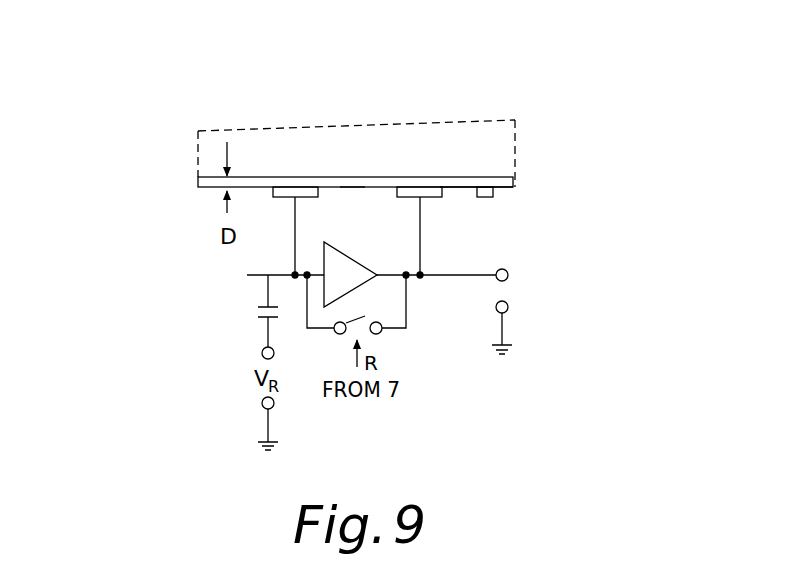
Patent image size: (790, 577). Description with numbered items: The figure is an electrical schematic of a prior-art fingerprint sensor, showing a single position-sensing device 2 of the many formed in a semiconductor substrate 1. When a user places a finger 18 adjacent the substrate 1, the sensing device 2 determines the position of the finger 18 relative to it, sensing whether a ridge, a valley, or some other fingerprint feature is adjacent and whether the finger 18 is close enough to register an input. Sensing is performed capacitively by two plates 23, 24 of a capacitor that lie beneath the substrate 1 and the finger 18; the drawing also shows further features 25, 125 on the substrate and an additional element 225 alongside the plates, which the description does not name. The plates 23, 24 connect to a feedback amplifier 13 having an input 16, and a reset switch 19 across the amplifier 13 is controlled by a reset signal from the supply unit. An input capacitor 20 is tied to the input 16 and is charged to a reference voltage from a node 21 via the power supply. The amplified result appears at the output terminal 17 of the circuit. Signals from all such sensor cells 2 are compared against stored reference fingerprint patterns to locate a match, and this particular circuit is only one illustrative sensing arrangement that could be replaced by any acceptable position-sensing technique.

The substrate 1 is at (503, 183).
The position-sensing device 2 is at (146, 261).
The feedback amplifier 13 is at (350, 252).
The input 16 is at (293, 275).
The output terminal 17 is at (508, 275).
The finger 18 is at (378, 123).
The reset switch 19 is at (363, 322).
The input capacitor 20 is at (257, 308).
The node 21 is at (262, 353).
The plate 23 is at (437, 197).
The plate 24 is at (283, 197).
The plate surface 25 is at (508, 188).
The plate portion 125 is at (355, 173).
The guard electrode 225 is at (487, 197).